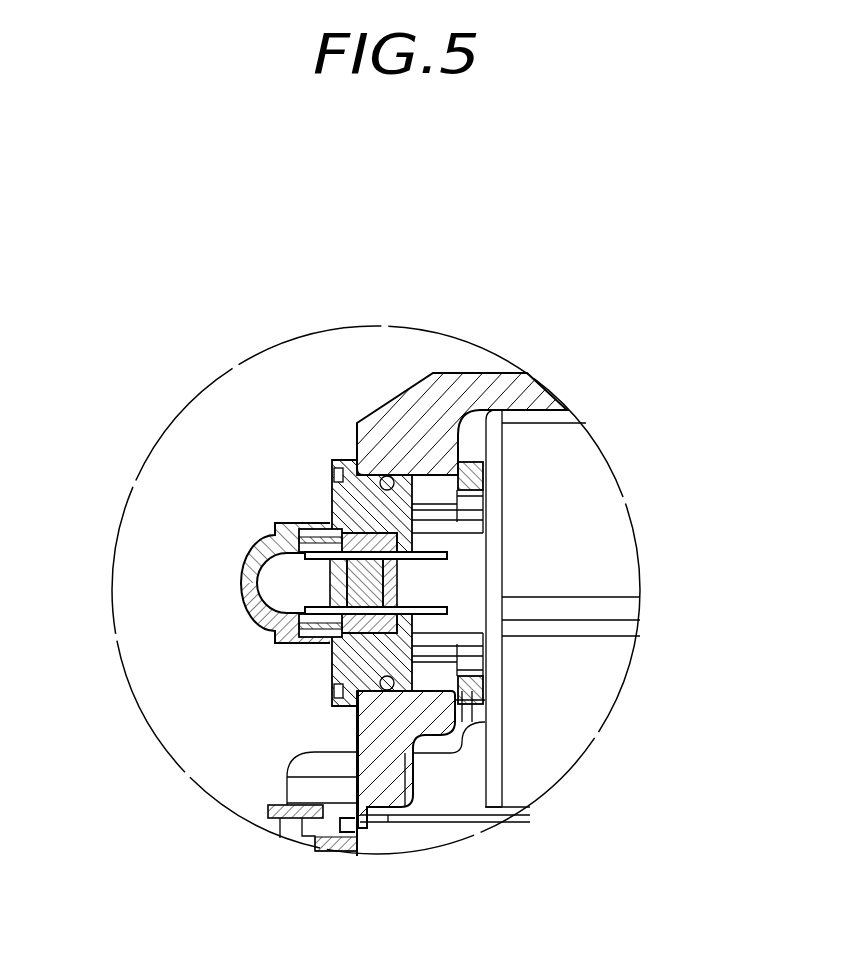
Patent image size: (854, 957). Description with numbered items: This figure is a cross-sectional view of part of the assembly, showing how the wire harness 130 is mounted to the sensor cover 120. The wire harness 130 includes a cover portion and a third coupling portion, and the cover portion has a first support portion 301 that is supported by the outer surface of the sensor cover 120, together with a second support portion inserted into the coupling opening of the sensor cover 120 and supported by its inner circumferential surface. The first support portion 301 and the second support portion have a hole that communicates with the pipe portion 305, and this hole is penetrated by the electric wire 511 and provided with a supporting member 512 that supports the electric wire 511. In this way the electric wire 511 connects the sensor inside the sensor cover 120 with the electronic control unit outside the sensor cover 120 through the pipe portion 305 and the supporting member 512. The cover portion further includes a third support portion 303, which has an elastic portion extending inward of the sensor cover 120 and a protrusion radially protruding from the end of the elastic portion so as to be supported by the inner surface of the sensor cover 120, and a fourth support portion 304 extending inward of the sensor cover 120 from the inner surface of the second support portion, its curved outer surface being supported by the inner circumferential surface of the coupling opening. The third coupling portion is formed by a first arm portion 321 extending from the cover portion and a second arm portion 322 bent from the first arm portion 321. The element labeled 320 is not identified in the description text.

The sensor cover 120 is at (392, 787).
The wire harness 130 is at (270, 670).
The first support portion 301 is at (347, 462).
The third support portion 303 is at (582, 570).
The fourth support portion 304 is at (470, 573).
The pipe portion 305 is at (243, 578).
The upper housing 320 is at (438, 487).
The first arm portion 321 is at (438, 513).
The second arm portion 322 is at (488, 489).
The electric wire 511 is at (319, 532).
The supporting member 512 is at (333, 578).